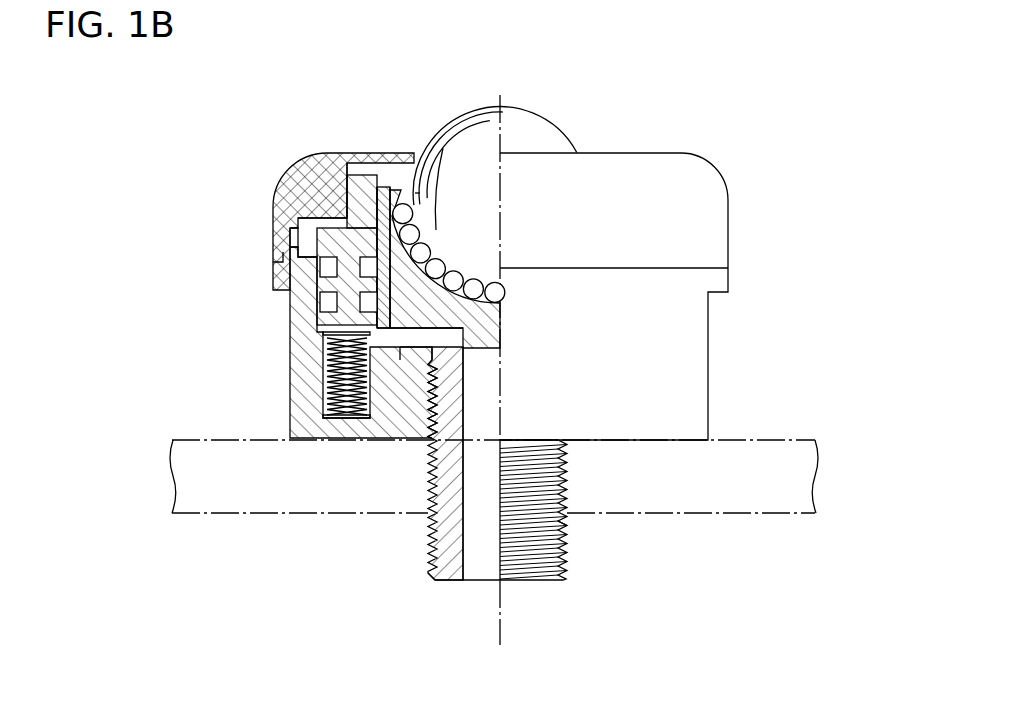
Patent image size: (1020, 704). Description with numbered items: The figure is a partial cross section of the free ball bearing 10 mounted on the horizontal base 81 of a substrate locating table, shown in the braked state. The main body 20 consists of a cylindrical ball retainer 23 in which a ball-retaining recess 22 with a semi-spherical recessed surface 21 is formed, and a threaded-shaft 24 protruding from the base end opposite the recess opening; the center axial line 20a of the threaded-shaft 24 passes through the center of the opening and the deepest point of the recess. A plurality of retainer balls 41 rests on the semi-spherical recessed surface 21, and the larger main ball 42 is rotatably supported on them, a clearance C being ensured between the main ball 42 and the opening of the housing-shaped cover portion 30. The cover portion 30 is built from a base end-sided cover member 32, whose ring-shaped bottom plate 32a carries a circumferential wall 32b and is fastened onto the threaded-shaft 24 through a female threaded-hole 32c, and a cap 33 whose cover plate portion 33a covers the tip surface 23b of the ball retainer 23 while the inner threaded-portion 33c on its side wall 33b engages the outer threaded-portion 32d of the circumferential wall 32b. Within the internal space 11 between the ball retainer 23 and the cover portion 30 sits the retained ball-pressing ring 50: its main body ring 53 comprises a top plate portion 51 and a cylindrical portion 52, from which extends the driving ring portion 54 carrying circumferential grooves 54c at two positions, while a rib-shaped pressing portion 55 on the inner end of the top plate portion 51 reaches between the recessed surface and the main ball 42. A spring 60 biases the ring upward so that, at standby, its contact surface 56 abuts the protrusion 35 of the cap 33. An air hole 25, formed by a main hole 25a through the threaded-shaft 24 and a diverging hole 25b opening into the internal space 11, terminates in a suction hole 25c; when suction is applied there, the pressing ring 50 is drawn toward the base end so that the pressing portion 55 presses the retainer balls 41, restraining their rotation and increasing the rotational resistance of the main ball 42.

The free ball bearing 10 is at (519, 314).
The internal space 11 is at (390, 357).
The main body 20 is at (499, 477).
The center axial line 20a is at (503, 600).
The semi-spherical recessed surface 21 is at (503, 300).
The ball-retaining recess 22 is at (459, 277).
The ball retainer 23 is at (372, 355).
The tip surface 23b is at (385, 187).
The threaded-shaft 24 is at (432, 562).
The air hole 25 is at (488, 504).
The main hole 25a is at (488, 528).
The diverging hole 25b is at (410, 338).
The suction hole 25c is at (481, 628).
The cover portion 30 is at (681, 296).
The base end-sided cover member 32 is at (657, 354).
The bottom plate 32a is at (400, 347).
The circumferential wall 32b is at (311, 400).
The female threaded-hole 32c is at (443, 583).
The outer threaded-portion 32d is at (290, 237).
The cap 33 is at (738, 213).
The cover plate portion 33a is at (376, 174).
The side wall 33b is at (275, 257).
The inner threaded-portion 33c is at (322, 268).
The protrusion 35 is at (330, 228).
The retainer balls 41 is at (456, 279).
The main ball 42 is at (543, 123).
The retained ball-pressing ring 50 is at (300, 216).
The top plate portion 51 is at (370, 186).
The cylindrical portion 52 is at (357, 195).
The main body ring 53 is at (326, 165).
The driving ring portion 54 is at (328, 305).
The groove 54c is at (328, 302).
The pressing portion 55 is at (418, 195).
The contact surface 56 is at (322, 210).
The spring 60 is at (330, 390).
The horizontal base 81 is at (758, 442).
The clearance C is at (420, 190).